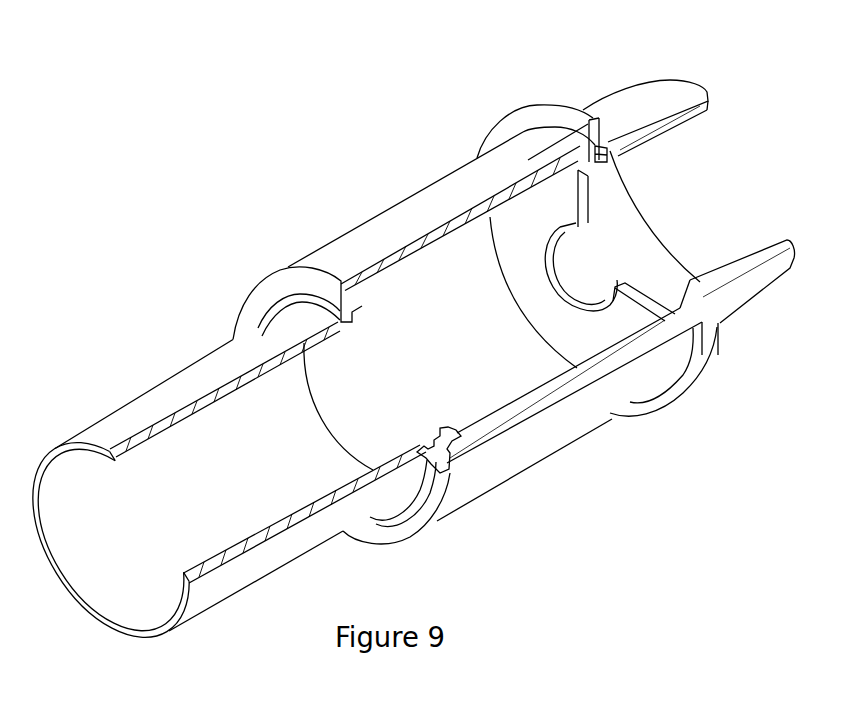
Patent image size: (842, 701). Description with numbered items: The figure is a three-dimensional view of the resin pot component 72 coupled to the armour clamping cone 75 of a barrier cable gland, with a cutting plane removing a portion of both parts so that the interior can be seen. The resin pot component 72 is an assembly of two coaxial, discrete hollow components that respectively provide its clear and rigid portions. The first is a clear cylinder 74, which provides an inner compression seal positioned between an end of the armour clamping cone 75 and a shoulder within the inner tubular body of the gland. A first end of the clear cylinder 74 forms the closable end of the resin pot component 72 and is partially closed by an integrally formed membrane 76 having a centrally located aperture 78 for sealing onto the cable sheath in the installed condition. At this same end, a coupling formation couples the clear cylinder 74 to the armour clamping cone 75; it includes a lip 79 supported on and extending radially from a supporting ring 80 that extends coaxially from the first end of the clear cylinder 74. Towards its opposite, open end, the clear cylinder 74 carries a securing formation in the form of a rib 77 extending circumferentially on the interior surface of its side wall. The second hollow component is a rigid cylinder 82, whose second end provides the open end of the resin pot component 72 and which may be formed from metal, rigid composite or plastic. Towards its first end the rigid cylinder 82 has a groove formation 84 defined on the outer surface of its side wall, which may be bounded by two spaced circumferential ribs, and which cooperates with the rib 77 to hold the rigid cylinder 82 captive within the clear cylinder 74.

The resin pot component 72 is at (650, 567).
The clear cylinder 74 is at (480, 205).
The armour clamping cone 75 is at (644, 105).
The membrane 76 is at (521, 225).
The rib 77 is at (362, 295).
The aperture 78 is at (564, 238).
The lip 79 is at (607, 157).
The supporting ring 80 is at (595, 146).
The rigid cylinder 82 is at (183, 382).
The groove formation 84 is at (438, 425).